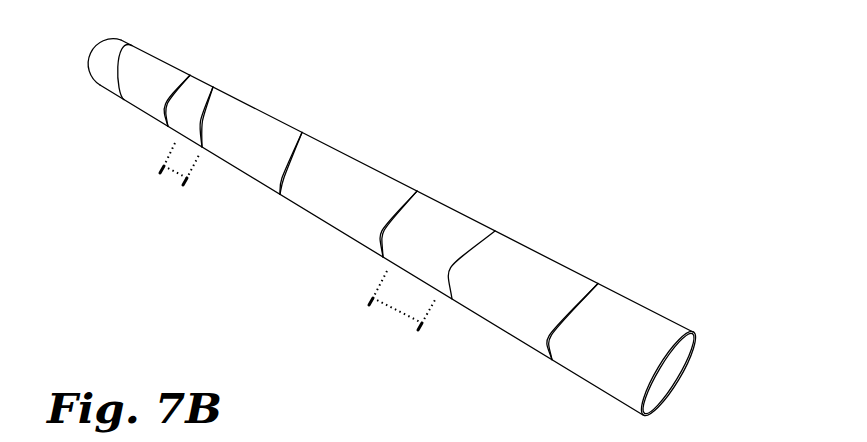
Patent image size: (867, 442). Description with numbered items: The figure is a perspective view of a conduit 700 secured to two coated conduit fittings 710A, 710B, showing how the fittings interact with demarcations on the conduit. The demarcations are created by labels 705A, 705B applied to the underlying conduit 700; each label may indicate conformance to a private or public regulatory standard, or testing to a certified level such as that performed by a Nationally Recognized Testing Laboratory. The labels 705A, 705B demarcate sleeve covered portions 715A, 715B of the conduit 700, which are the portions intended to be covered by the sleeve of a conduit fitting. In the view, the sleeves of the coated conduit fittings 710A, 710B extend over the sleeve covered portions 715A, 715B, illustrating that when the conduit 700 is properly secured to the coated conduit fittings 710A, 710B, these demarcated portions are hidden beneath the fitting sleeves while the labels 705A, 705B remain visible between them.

The conduit 700 is at (403, 110).
The label 705A is at (292, 120).
The label 705B is at (317, 215).
The coated conduit fitting 710A is at (174, 66).
The coated conduit fitting 710B is at (516, 242).
The sleeve covered portion 715A is at (163, 170).
The sleeve covered portion 715B is at (396, 308).